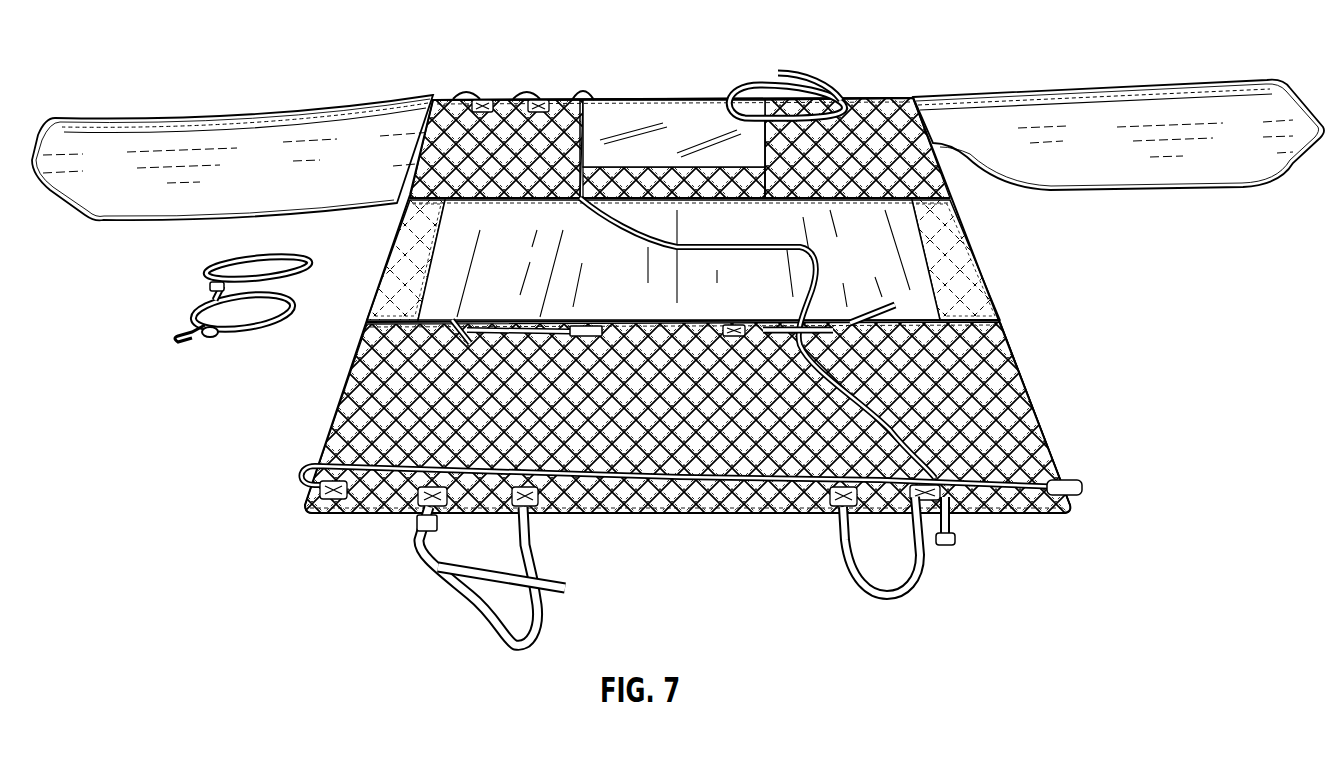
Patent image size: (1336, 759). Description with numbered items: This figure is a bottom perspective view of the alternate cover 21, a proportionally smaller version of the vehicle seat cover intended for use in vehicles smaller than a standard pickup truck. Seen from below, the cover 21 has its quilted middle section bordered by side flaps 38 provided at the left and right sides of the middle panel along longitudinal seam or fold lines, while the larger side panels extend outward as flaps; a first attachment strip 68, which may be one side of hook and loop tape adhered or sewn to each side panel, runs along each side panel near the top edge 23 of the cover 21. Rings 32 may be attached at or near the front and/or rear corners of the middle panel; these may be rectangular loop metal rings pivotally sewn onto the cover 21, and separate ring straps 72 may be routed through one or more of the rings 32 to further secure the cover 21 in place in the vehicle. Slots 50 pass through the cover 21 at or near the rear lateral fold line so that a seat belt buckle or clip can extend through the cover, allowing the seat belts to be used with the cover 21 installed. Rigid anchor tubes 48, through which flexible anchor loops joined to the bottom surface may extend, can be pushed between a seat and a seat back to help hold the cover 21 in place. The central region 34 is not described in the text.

The first attachment strip 68 is at (240, 117).
The top edge 23 is at (378, 102).
The alternate cover 21 is at (577, 97).
The side flap 38 is at (403, 252).
The central window panel 34 is at (602, 253).
The anchor tube 48 is at (497, 325).
The slot 50 is at (590, 323).
The ring 32 is at (928, 198).
The ring strap 72 is at (196, 309).